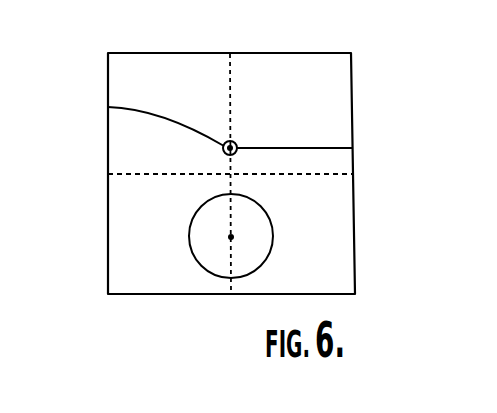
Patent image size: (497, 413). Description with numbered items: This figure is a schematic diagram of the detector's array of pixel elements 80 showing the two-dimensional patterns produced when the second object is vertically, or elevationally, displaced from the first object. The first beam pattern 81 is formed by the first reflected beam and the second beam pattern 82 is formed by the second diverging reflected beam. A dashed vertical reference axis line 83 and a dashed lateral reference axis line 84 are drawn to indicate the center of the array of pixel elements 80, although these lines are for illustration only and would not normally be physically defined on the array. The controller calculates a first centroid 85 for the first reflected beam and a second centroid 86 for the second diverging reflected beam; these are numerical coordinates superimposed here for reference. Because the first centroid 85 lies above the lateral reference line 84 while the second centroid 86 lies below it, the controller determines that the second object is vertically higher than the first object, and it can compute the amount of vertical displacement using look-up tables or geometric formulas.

The array of pixel elements 80 is at (341, 108).
The first beam pattern 81 is at (108, 107).
The second beam pattern 82 is at (190, 247).
The vertical reference axis line 83 is at (228, 80).
The lateral reference axis line 84 is at (122, 174).
The first centroid 85 is at (352, 148).
The second centroid 86 is at (234, 237).